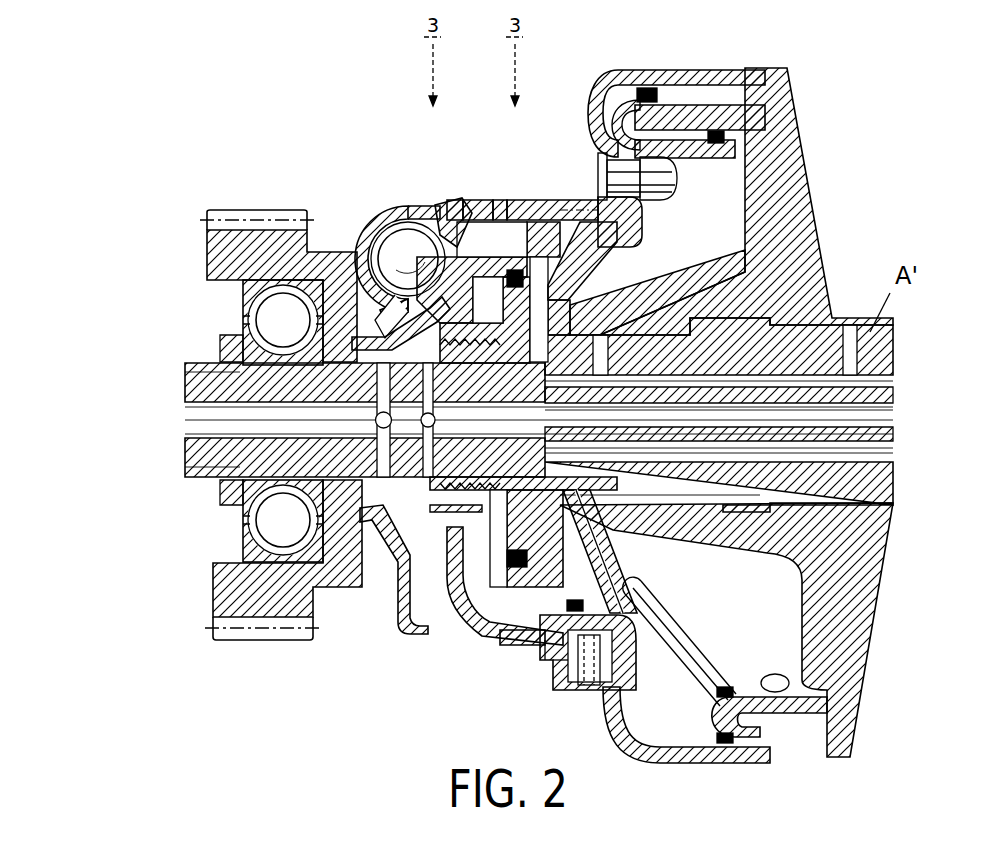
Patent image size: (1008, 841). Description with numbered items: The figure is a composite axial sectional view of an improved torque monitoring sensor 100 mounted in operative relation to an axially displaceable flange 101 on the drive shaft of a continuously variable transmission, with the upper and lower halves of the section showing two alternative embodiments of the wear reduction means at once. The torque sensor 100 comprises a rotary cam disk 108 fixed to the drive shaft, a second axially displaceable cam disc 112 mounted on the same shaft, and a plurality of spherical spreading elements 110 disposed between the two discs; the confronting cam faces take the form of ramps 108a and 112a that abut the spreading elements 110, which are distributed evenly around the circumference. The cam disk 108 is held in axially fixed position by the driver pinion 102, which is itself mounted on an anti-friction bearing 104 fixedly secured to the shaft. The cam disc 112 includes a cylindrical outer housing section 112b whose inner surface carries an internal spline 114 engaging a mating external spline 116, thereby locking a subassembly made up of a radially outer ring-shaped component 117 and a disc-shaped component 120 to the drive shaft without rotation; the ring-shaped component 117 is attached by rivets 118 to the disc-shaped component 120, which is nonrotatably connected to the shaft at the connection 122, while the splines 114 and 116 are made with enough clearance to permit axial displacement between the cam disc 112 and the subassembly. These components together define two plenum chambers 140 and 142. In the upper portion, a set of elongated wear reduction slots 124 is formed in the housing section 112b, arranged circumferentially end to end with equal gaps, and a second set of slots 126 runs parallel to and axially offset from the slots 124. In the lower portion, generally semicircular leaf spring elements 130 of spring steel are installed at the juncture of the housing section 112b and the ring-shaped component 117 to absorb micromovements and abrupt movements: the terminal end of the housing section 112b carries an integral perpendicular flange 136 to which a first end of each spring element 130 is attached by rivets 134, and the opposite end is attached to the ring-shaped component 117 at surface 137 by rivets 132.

The torque sensor 100 is at (106, 282).
The axially displaceable flange 101 is at (790, 172).
The driver pinion 102 is at (268, 213).
The anti-friction bearing 104 is at (250, 296).
The rotary cam disk 108 is at (420, 222).
The ramp 108a is at (372, 300).
The spherical spreading elements 110 is at (405, 255).
The second axially displaceable cam disc 112 is at (455, 250).
The ramp 112a is at (448, 205).
The outer housing section 112b is at (527, 200).
The internal spline 114 is at (507, 198).
The external spline 116 is at (575, 200).
The ring-shaped component 117 is at (605, 252).
The rivets 118 is at (650, 183).
The disc-shaped component 120 is at (643, 233).
The nonrotatable connection 122 is at (470, 352).
The wear reduction slots 124 is at (468, 200).
The second set of slots 126 is at (498, 200).
The leaf spring elements 130 is at (585, 690).
The rivets 132 is at (625, 655).
The rivets 134 is at (545, 665).
The perpendicular flange 136 is at (562, 700).
The surface 137 is at (636, 683).
The plenum chamber 140 is at (500, 323).
The plenum chamber 142 is at (575, 282).